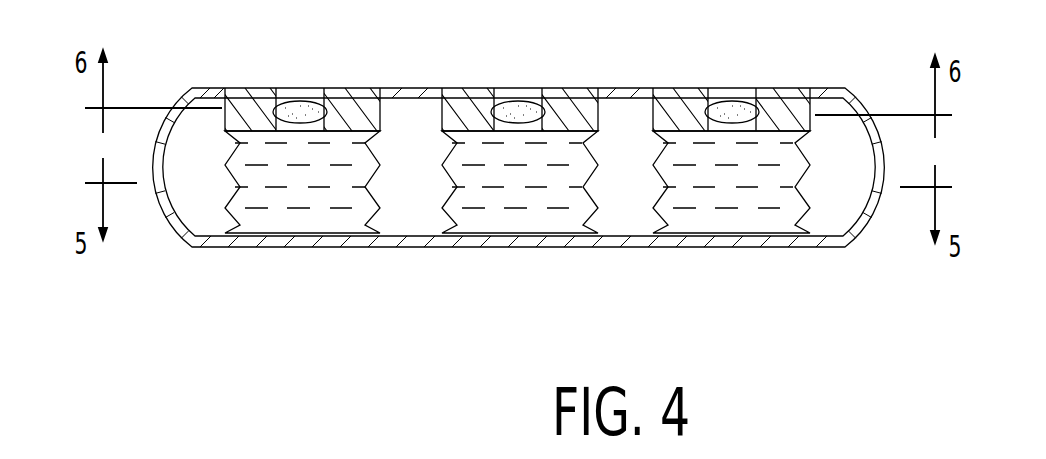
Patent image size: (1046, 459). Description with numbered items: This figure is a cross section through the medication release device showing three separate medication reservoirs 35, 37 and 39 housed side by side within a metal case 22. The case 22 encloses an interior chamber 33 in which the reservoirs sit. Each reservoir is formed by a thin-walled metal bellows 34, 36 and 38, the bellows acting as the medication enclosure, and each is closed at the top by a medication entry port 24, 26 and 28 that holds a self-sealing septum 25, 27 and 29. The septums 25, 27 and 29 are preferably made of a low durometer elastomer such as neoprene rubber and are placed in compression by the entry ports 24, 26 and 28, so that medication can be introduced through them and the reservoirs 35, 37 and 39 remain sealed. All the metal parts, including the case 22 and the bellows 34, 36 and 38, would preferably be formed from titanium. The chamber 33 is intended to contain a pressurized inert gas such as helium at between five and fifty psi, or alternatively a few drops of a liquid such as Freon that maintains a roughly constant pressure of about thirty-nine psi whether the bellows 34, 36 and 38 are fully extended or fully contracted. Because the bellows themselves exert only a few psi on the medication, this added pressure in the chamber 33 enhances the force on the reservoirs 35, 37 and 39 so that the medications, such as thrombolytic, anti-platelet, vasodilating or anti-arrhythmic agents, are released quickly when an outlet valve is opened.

The metal case 22 is at (205, 88).
The medication entry port 24 is at (357, 89).
The self-sealing septum 25 is at (300, 100).
The medication entry port 26 is at (572, 89).
The self-sealing septum 27 is at (520, 100).
The medication entry port 28 is at (788, 89).
The self-sealing septum 29 is at (730, 100).
The interior chamber 33 is at (830, 220).
The thin-walled metal bellows 34 is at (238, 187).
The medication reservoir 35 is at (288, 212).
The thin-walled metal bellows 36 is at (594, 170).
The medication reservoir 37 is at (502, 213).
The thin-walled metal bellows 38 is at (800, 193).
The medication reservoir 39 is at (725, 215).